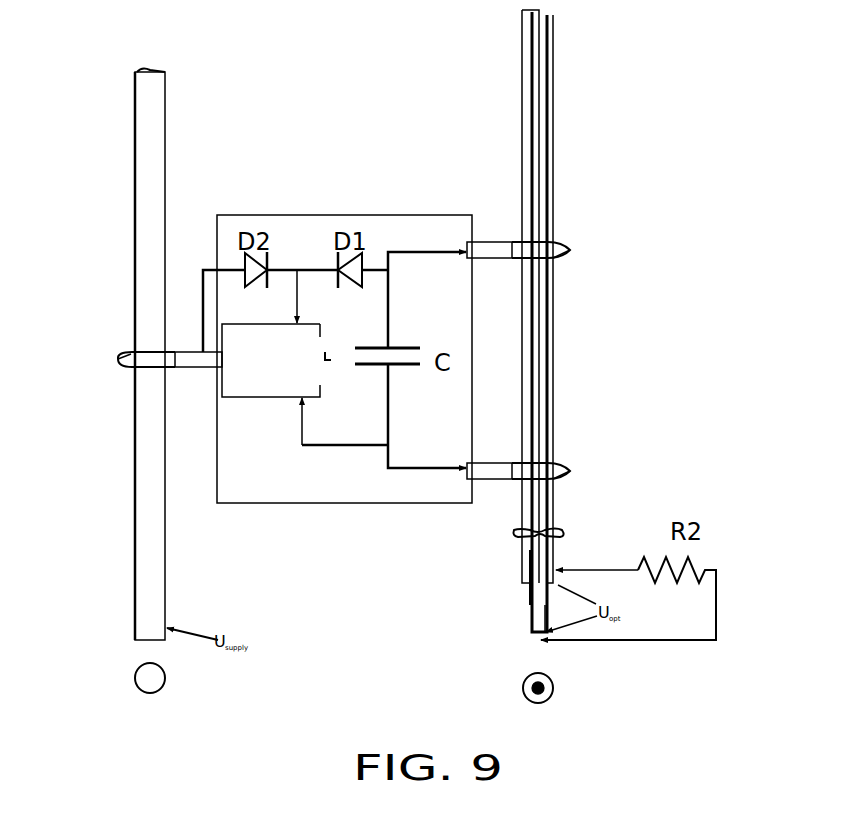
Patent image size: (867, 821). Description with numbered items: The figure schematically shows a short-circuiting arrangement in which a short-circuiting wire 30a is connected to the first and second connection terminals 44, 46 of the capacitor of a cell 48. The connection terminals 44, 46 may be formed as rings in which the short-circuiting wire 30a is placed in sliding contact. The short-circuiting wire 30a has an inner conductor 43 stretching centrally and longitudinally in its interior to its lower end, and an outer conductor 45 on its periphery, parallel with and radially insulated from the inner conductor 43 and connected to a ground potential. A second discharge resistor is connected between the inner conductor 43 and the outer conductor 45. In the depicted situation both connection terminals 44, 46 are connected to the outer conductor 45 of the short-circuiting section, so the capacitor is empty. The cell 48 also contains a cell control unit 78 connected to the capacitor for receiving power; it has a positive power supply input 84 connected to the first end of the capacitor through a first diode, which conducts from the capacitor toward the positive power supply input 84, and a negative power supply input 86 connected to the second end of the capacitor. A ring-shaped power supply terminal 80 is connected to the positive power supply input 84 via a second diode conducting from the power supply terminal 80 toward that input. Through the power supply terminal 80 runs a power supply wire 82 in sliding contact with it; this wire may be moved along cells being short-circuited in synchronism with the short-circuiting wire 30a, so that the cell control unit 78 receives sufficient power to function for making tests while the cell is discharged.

The short-circuiting wire 30a is at (523, 108).
The inner conductor 43 is at (532, 608).
The first connection terminal 44 is at (568, 249).
The outer conductor 45 is at (522, 562).
The second connection terminal 46 is at (568, 472).
The cell 48 is at (385, 214).
The cell control unit 78 is at (276, 360).
The power supply terminal 80 is at (128, 362).
The power supply wire 82 is at (134, 486).
The positive power supply input 84 is at (275, 298).
The negative power supply input 86 is at (323, 421).